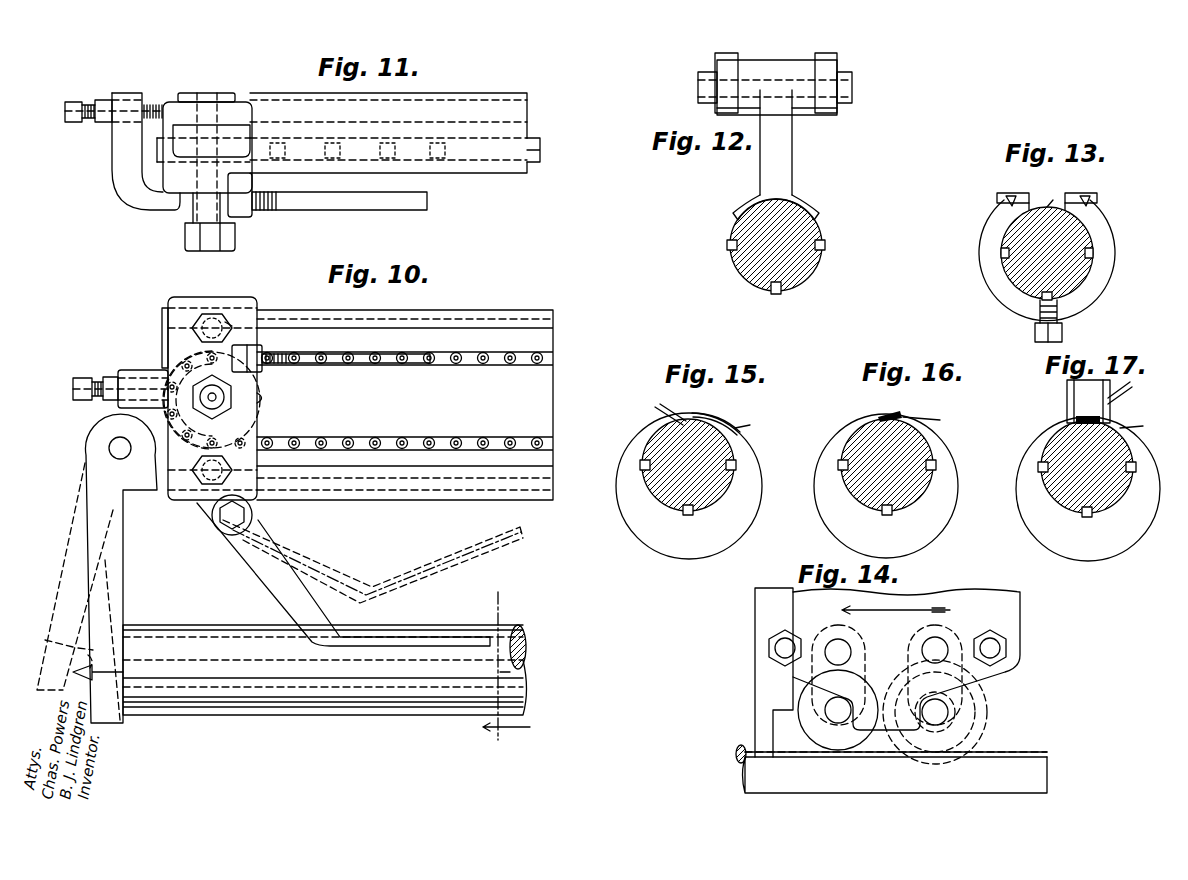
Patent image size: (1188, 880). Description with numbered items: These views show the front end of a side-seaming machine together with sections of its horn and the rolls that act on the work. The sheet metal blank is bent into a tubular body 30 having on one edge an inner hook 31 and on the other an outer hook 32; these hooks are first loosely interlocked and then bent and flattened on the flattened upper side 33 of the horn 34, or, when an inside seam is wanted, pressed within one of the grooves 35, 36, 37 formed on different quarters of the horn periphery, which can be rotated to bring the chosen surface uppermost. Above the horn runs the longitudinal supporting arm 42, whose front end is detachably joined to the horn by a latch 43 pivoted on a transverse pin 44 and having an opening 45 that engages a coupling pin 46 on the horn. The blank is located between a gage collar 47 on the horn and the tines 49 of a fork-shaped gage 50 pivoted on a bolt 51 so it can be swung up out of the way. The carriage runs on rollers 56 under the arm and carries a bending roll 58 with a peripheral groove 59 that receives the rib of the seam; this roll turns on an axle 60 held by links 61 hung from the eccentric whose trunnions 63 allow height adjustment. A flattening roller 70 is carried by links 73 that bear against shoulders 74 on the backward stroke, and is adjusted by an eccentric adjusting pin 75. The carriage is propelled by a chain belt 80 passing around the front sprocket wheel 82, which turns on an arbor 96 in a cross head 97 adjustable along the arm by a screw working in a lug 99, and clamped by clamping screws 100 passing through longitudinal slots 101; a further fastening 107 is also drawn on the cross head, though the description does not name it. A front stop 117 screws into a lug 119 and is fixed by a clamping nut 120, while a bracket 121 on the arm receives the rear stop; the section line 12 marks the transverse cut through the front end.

In FIG. 10, the section line 12 is at (506, 667).
In FIG. 15, the tubular body 30 is at (700, 557).
In FIG. 16, the tubular body 30 is at (940, 540).
In FIG. 17, the tubular body 30 is at (1116, 547).
In FIG. 14, the tubular body 30 is at (1045, 746).
In FIG. 15, the inner hook 31 is at (666, 406).
In FIG. 16, the inner hook 31 is at (905, 416).
In FIG. 17, the inner hook 31 is at (1112, 419).
In FIG. 15, the outer hook 32 is at (698, 415).
In FIG. 16, the outer hook 32 is at (880, 418).
In FIG. 17, the outer hook 32 is at (1074, 421).
In FIG. 10, the flattened upper side 33 is at (496, 635).
In FIG. 13, the flattened upper side 33 is at (1047, 205).
In FIG. 15, the flattened upper side 33 is at (756, 426).
In FIG. 17, the flattened upper side 33 is at (1145, 427).
In FIG. 14, the flattened upper side 33 is at (1048, 757).
In FIG. 10, the horn 34 is at (392, 713).
In FIG. 12, the horn 34 is at (745, 278).
In FIG. 13, the horn 34 is at (1010, 283).
In FIG. 15, the horn 34 is at (688, 465).
In FIG. 16, the horn 34 is at (887, 465).
In FIG. 17, the horn 34 is at (1084, 477).
In FIG. 14, the horn 34 is at (895, 775).
In FIG. 10, the groove 35 is at (510, 675).
In FIG. 12, the groove 35 is at (730, 247).
In FIG. 15, the groove 35 is at (645, 470).
In FIG. 16, the groove 35 is at (845, 470).
In FIG. 17, the groove 35 is at (1045, 472).
In FIG. 12, the groove 36 is at (777, 294).
In FIG. 15, the groove 36 is at (688, 514).
In FIG. 16, the groove 36 is at (887, 514).
In FIG. 17, the groove 36 is at (1087, 516).
In FIG. 12, the groove 37 is at (825, 247).
In FIG. 15, the groove 37 is at (732, 468).
In FIG. 16, the groove 37 is at (930, 470).
In FIG. 17, the groove 37 is at (1132, 472).
In FIG. 11, the supporting arm 42 is at (283, 93).
In FIG. 10, the supporting arm 42 is at (480, 307).
In FIG. 10, the latch 43 is at (68, 548).
In FIG. 10, the transverse pin 44 is at (110, 449).
In FIG. 10, the opening 45 is at (78, 648).
In FIG. 10, the coupling pin 46 is at (92, 672).
In FIG. 13, the coupling pin 46 is at (1035, 333).
In FIG. 13, the gage collar 47 is at (984, 220).
In FIG. 10, the tines 49 is at (446, 637).
In FIG. 12, the tines 49 is at (806, 210).
In FIG. 10, the fork-shaped gage 50 is at (268, 588).
In FIG. 12, the fork-shaped gage 50 is at (790, 172).
In FIG. 10, the bolt 51 is at (227, 521).
In FIG. 12, the bolt 51 is at (853, 92).
In FIG. 14, the rollers 56 is at (1002, 648).
In FIG. 14, the bending roll 58 is at (866, 738).
In FIG. 17, the peripheral groove 59 is at (1067, 398).
In FIG. 10, the axle 60 is at (498, 365).
In FIG. 14, the axle 60 is at (838, 706).
In FIG. 14, the links 61 is at (820, 718).
In FIG. 14, the trunnions 63 is at (840, 652).
In FIG. 14, the flattening roller 70 is at (950, 712).
In FIG. 14, the links 73 is at (965, 714).
In FIG. 14, the shoulders 74 is at (985, 722).
In FIG. 14, the adjusting pin 75 is at (937, 650).
In FIG. 11, the chain belt 80 is at (534, 152).
In FIG. 10, the front sprocket wheel 82 is at (263, 398).
In FIG. 11, the arbor 96 is at (90, 102).
In FIG. 10, the arbor 96 is at (86, 378).
In FIG. 10, the cross head 97 is at (257, 307).
In FIG. 11, the lug 99 is at (128, 98).
In FIG. 10, the lug 99 is at (130, 372).
In FIG. 11, the clamping screws 100 is at (200, 228).
In FIG. 10, the clamping screws 100 is at (212, 313).
In FIG. 11, the longitudinal slots 101 is at (178, 187).
In FIG. 10, the longitudinal slots 101 is at (226, 322).
In FIG. 10, the nut 107 is at (233, 470).
In FIG. 11, the front stop 117 is at (408, 210).
In FIG. 10, the front stop 117 is at (385, 366).
In FIG. 11, the lug 119 is at (246, 217).
In FIG. 10, the lug 119 is at (260, 350).
In FIG. 11, the clamping nut 120 is at (268, 197).
In FIG. 10, the clamping nut 120 is at (262, 351).
In FIG. 14, the bracket 121 is at (758, 745).